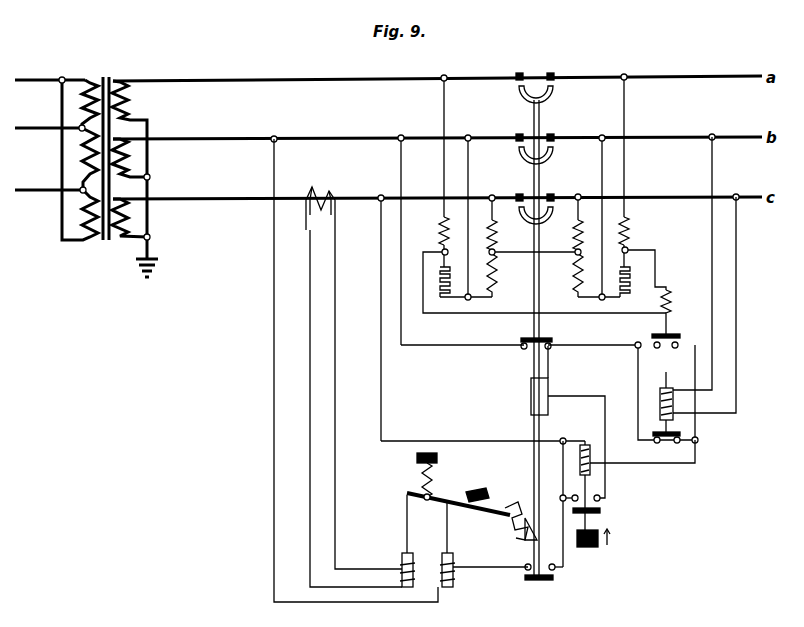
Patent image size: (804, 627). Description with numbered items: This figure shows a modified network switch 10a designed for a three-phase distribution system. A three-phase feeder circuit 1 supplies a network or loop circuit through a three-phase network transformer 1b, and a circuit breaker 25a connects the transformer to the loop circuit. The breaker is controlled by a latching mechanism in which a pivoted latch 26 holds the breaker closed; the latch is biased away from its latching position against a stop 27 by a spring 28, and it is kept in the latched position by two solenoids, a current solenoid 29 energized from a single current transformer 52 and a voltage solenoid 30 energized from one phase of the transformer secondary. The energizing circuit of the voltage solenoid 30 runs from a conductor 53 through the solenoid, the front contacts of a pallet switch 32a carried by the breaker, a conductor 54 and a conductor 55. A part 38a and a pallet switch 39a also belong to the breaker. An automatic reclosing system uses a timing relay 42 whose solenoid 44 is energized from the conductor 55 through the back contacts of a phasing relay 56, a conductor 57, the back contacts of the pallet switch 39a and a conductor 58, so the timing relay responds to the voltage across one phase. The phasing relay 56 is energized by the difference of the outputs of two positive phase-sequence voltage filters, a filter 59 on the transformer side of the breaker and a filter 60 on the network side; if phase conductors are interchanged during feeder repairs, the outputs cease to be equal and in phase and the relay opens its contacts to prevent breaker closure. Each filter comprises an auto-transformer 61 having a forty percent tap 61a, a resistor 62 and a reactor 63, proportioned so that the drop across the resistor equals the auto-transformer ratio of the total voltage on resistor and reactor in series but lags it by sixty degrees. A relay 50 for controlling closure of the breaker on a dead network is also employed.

The three-phase feeder circuit 1 is at (56, 146).
The network transformer 1b is at (112, 75).
The network switch 10a is at (218, 300).
The circuit breaker 25a is at (545, 119).
The latch 26 is at (490, 514).
The stop 27 is at (480, 492).
The spring 28 is at (420, 480).
The current solenoid 29 is at (400, 560).
The voltage solenoid 30 is at (455, 560).
The pallet switch 32a is at (540, 583).
The part corresponding to part 38 of Fig. 8 38a is at (530, 386).
The pallet switch 39a is at (552, 339).
The timing relay 42 is at (601, 520).
The solenoid of the timing relay 44 is at (585, 441).
The relay 50 is at (672, 379).
The current transformer 52 is at (315, 188).
The conductor 53 is at (272, 354).
The conductor 54 is at (566, 567).
The conductor 55 is at (471, 440).
The phasing relay 56 is at (673, 313).
The conductor 57 is at (630, 344).
The conductor 58 is at (452, 348).
The positive phase-sequence voltage filter 59 is at (518, 304).
The positive phase-sequence voltage filter 60 is at (661, 246).
The auto-transformer 61 is at (576, 234).
The tap 61a is at (535, 273).
The resistor 62 is at (537, 289).
The reactor 63 is at (440, 228).